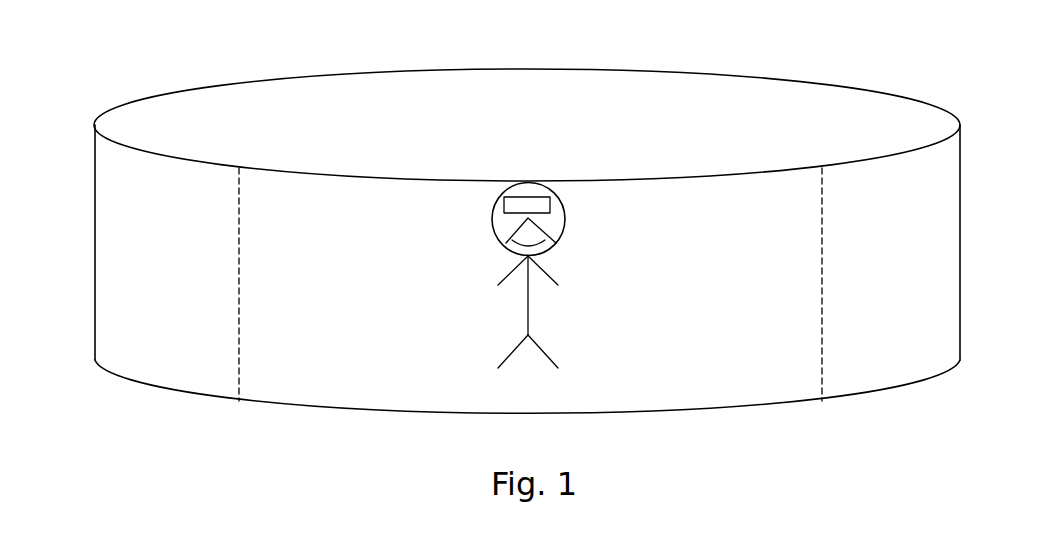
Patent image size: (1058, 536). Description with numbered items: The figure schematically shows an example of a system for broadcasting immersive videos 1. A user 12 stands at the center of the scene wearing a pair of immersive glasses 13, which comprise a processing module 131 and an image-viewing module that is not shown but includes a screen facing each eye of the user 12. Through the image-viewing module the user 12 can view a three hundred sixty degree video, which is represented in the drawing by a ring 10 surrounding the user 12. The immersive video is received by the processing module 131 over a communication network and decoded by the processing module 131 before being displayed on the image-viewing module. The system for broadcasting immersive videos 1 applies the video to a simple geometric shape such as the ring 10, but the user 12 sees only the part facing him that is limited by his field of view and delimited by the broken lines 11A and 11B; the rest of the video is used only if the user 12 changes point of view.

The system for broadcasting immersive videos 1 is at (296, 52).
The ring 10 is at (96, 256).
The broken line 11A is at (240, 280).
The broken line 11B is at (822, 282).
The user 12 is at (530, 320).
The pair of immersive glasses 13 is at (492, 231).
The processing module 131 is at (526, 203).